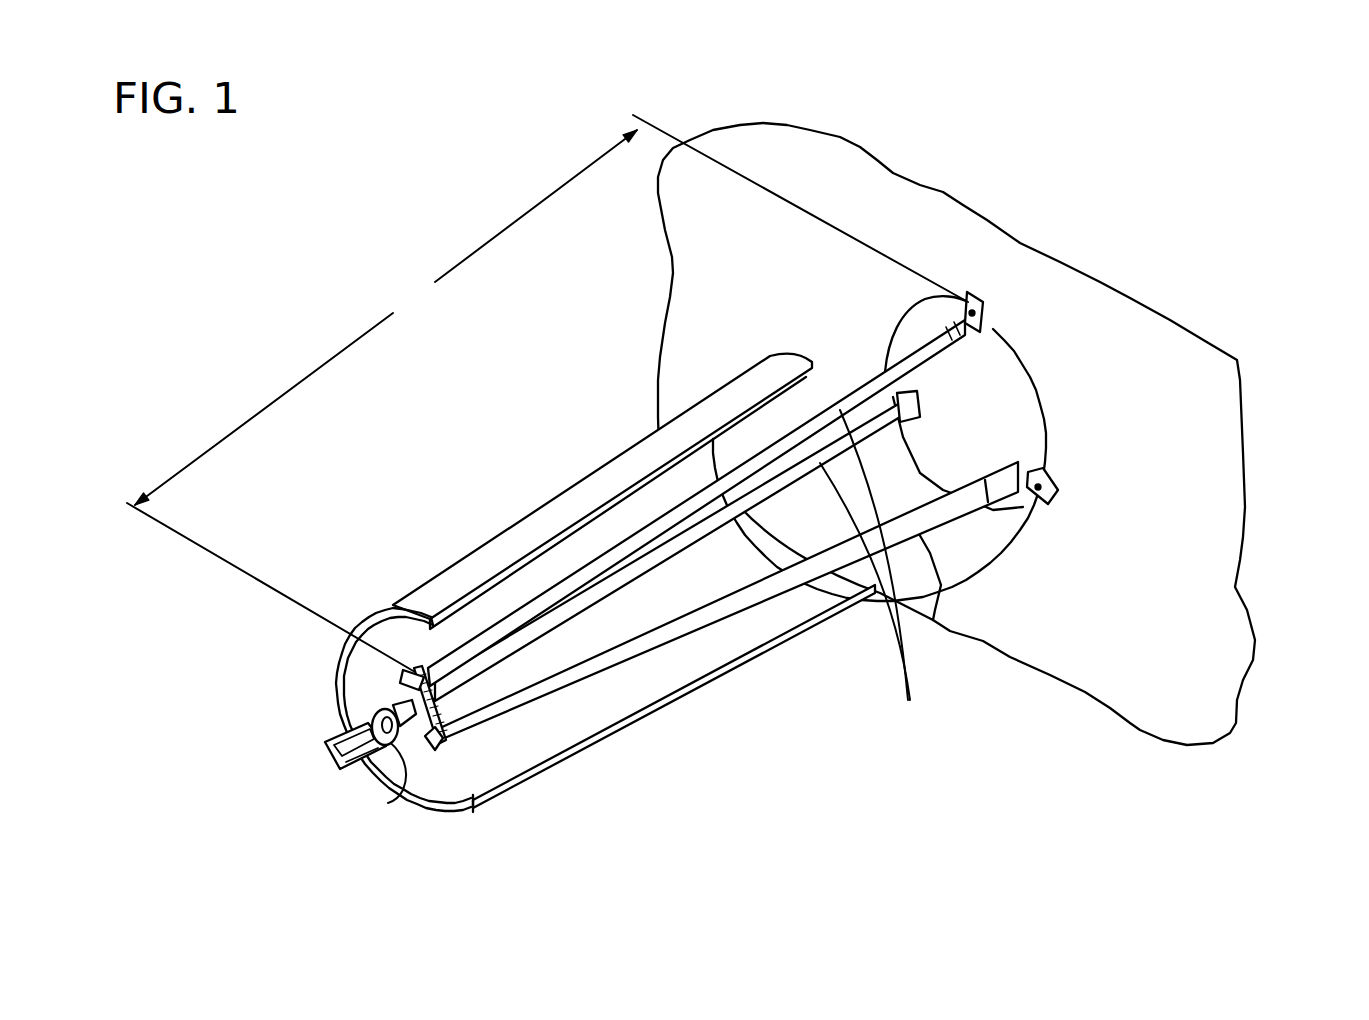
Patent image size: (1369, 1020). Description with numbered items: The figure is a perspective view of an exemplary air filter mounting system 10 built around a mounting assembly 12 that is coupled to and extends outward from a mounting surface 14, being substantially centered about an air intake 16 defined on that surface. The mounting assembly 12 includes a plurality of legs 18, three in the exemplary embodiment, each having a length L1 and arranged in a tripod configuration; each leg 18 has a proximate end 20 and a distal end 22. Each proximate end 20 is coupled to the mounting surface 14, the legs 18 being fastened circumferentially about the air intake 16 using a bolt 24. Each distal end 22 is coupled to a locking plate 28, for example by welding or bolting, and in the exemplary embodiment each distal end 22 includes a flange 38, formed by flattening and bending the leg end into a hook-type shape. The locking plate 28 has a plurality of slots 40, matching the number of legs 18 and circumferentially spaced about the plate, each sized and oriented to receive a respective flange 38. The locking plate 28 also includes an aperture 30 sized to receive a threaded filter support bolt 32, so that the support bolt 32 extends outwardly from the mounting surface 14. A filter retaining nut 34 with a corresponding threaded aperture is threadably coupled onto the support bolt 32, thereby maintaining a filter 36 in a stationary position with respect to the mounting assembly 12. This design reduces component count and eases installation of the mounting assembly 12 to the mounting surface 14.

The air filter mounting system 10 is at (482, 190).
The mounting assembly 12 is at (753, 489).
The mounting surface 14 is at (1217, 396).
The air intake 16 is at (1012, 348).
The legs 18 is at (873, 574).
The proximate end 20 is at (983, 298).
The distal end 22 is at (415, 664).
The bolt 24 is at (1037, 500).
The locking plate 28 is at (340, 666).
The aperture 30 is at (372, 714).
The filter support bolt 32 is at (406, 751).
The filter retaining nut 34 is at (325, 742).
The filter 36 is at (503, 549).
The flange 38 is at (473, 710).
The slots 40 is at (440, 734).